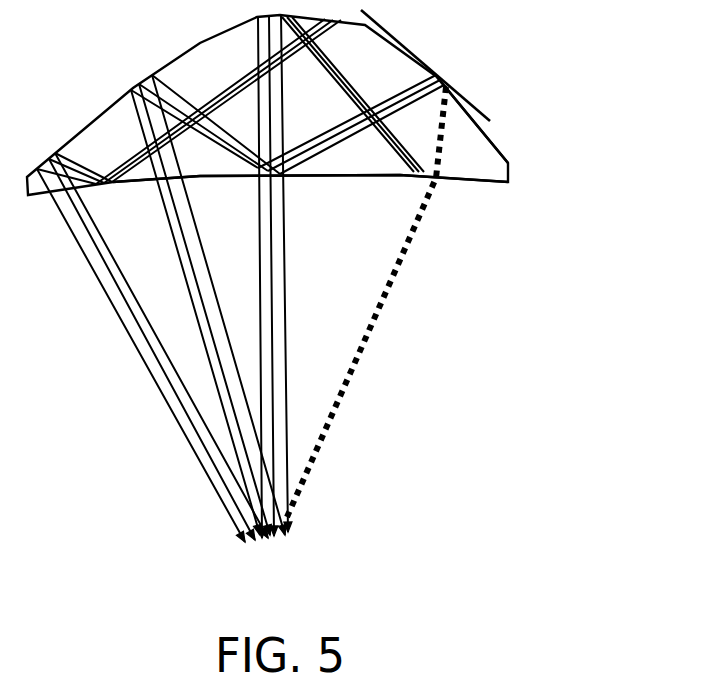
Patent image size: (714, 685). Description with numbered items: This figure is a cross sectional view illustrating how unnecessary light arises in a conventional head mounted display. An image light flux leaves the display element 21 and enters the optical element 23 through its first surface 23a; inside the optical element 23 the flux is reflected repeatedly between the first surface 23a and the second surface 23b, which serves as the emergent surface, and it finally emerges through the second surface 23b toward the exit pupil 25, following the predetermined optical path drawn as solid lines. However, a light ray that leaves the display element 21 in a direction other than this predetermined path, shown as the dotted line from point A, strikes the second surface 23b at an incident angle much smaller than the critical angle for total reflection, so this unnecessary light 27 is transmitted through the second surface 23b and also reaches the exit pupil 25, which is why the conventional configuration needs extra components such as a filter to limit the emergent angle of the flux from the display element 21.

The display element 21 is at (383, 34).
The optical element 23 is at (483, 177).
The first surface 23a is at (490, 143).
The second surface 23b is at (377, 174).
The exit pupil 25 is at (276, 546).
The unnecessary light 27 is at (357, 373).
The point A on incident line A is at (453, 73).